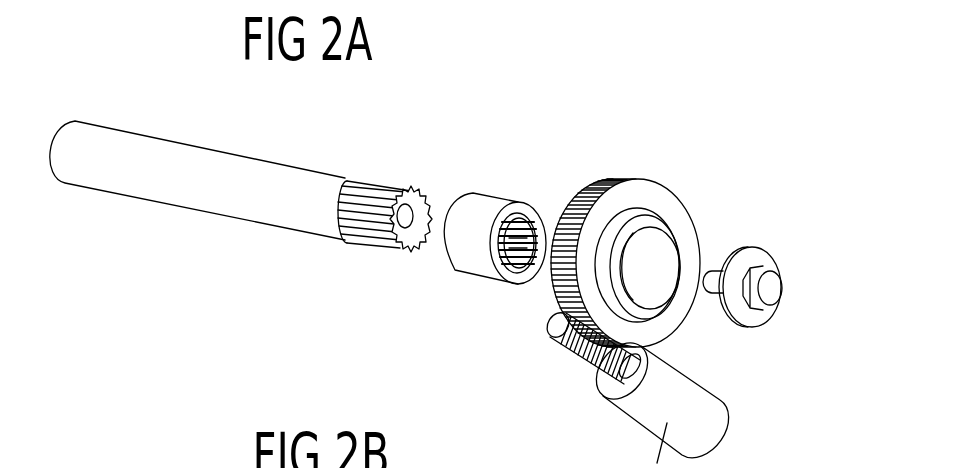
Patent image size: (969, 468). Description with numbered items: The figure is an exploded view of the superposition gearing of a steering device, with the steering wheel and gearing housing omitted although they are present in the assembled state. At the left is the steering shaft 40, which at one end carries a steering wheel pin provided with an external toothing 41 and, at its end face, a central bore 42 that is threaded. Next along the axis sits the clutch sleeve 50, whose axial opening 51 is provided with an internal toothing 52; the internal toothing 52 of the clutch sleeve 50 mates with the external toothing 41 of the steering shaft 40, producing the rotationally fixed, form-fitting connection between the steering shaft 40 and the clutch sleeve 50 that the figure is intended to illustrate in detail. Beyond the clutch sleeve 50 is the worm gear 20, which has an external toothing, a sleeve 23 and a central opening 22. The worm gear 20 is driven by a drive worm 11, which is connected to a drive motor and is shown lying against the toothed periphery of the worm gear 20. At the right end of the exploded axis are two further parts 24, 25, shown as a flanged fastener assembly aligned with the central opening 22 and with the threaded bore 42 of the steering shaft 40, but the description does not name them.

The steering shaft 40 is at (197, 210).
The external toothing 41 is at (373, 182).
The end-side central bore 42 is at (402, 222).
The clutch sleeve 50 is at (490, 193).
The axial opening 51 is at (502, 262).
The internal toothing 52 is at (525, 288).
The worm gear 20 is at (650, 197).
The sleeve 23 is at (673, 230).
The central opening 22 is at (662, 285).
The drive worm 11 is at (578, 355).
The washer / flange of bolt 24 is at (767, 295).
The bolt head 25 is at (762, 262).